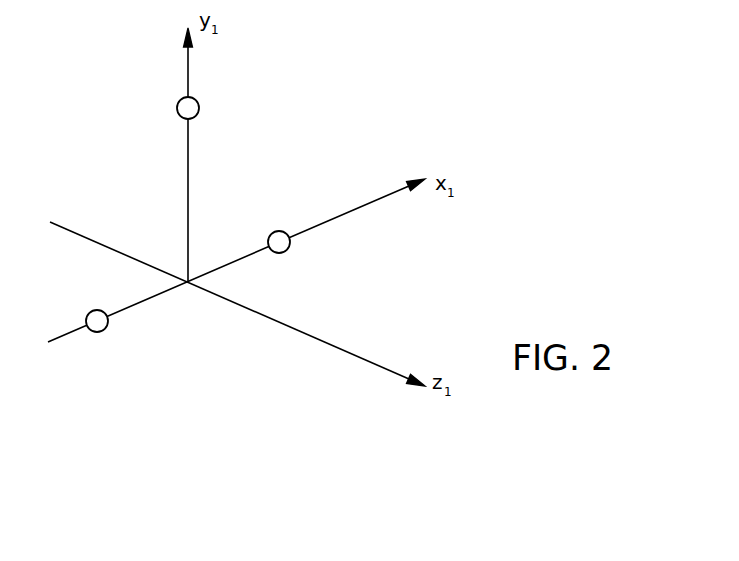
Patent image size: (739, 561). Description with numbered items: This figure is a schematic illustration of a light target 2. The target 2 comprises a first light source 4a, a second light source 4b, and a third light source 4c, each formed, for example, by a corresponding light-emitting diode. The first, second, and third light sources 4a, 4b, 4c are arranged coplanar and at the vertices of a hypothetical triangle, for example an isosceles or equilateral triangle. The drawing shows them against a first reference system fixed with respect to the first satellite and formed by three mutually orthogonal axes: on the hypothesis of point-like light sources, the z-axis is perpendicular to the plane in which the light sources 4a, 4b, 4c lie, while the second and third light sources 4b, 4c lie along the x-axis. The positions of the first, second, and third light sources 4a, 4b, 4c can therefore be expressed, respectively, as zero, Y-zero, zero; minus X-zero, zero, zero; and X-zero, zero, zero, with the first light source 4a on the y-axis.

The target 2 is at (372, 105).
The first light source 4a is at (189, 108).
The second light source 4b is at (98, 322).
The third light source 4c is at (279, 245).